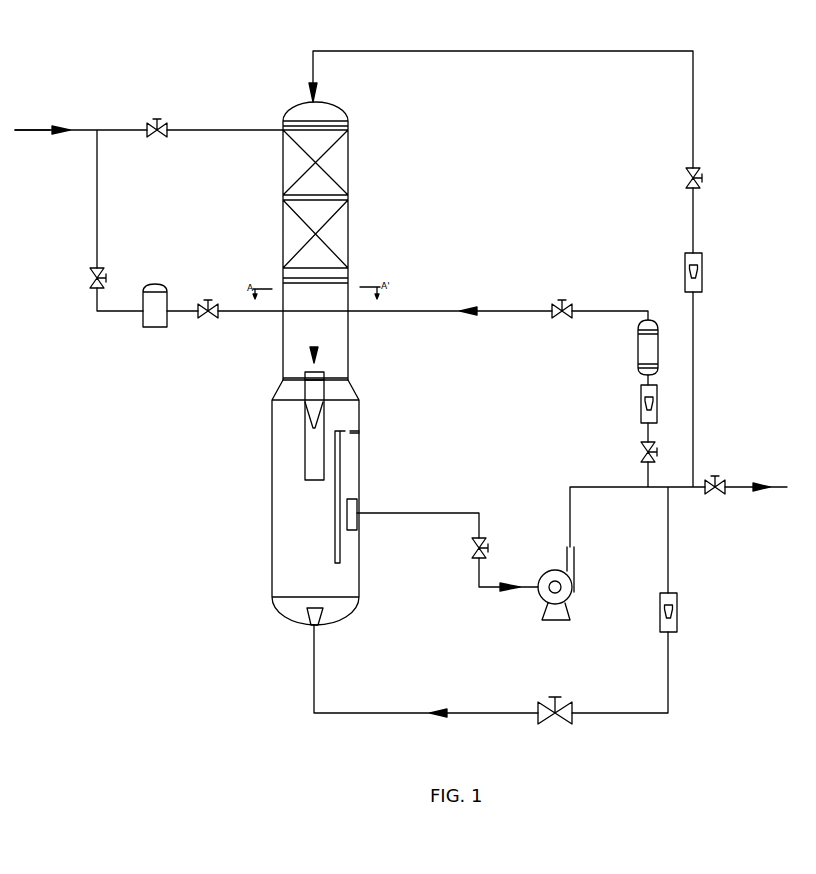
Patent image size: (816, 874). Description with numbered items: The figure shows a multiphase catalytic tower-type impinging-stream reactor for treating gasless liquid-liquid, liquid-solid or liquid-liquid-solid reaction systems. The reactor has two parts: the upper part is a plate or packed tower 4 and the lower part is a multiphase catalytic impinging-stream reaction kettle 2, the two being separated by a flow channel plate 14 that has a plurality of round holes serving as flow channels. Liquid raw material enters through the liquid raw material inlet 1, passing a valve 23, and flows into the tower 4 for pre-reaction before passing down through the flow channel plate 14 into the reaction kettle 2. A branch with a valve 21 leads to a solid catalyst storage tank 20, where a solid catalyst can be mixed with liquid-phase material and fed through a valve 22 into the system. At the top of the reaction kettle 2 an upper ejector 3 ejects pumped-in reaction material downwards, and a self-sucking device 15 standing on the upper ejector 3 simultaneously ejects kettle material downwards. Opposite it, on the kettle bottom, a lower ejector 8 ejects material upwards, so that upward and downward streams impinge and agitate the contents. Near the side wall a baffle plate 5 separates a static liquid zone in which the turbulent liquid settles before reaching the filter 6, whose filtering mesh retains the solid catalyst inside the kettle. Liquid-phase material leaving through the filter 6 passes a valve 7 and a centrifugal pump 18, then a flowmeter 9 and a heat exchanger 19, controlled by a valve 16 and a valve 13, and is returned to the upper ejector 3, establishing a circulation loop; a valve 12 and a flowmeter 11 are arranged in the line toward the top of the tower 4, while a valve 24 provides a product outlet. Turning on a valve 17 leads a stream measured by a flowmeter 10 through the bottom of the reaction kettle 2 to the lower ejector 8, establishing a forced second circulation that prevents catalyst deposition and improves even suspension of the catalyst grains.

The liquid raw material inlet 1 is at (39, 127).
The multiphase catalytic impinging-stream reaction kettle 2 is at (273, 517).
The upper ejector 3 is at (305, 440).
The plate or packed tower 4 is at (280, 243).
The baffle plate 5 is at (335, 553).
The filter 6 is at (350, 510).
The valve 7 is at (471, 540).
The lower ejector 8 is at (307, 627).
The flowmeter 9 is at (629, 392).
The flowmeter 10 is at (660, 613).
The flowmeter 11 is at (680, 268).
The valve 12 is at (689, 173).
The valve 13 is at (560, 319).
The flow channel plate 14 is at (333, 377).
The self-sucking device 15 is at (304, 396).
The valve 16 is at (643, 443).
The valve 17 is at (556, 698).
The centrifugal pump 18 is at (541, 606).
The heat exchanger 19 is at (631, 330).
The solid catalyst storage tank 20 is at (141, 316).
The valve 21 is at (96, 289).
The valve 22 is at (208, 298).
The valve 23 is at (155, 138).
The valve 24 is at (720, 480).